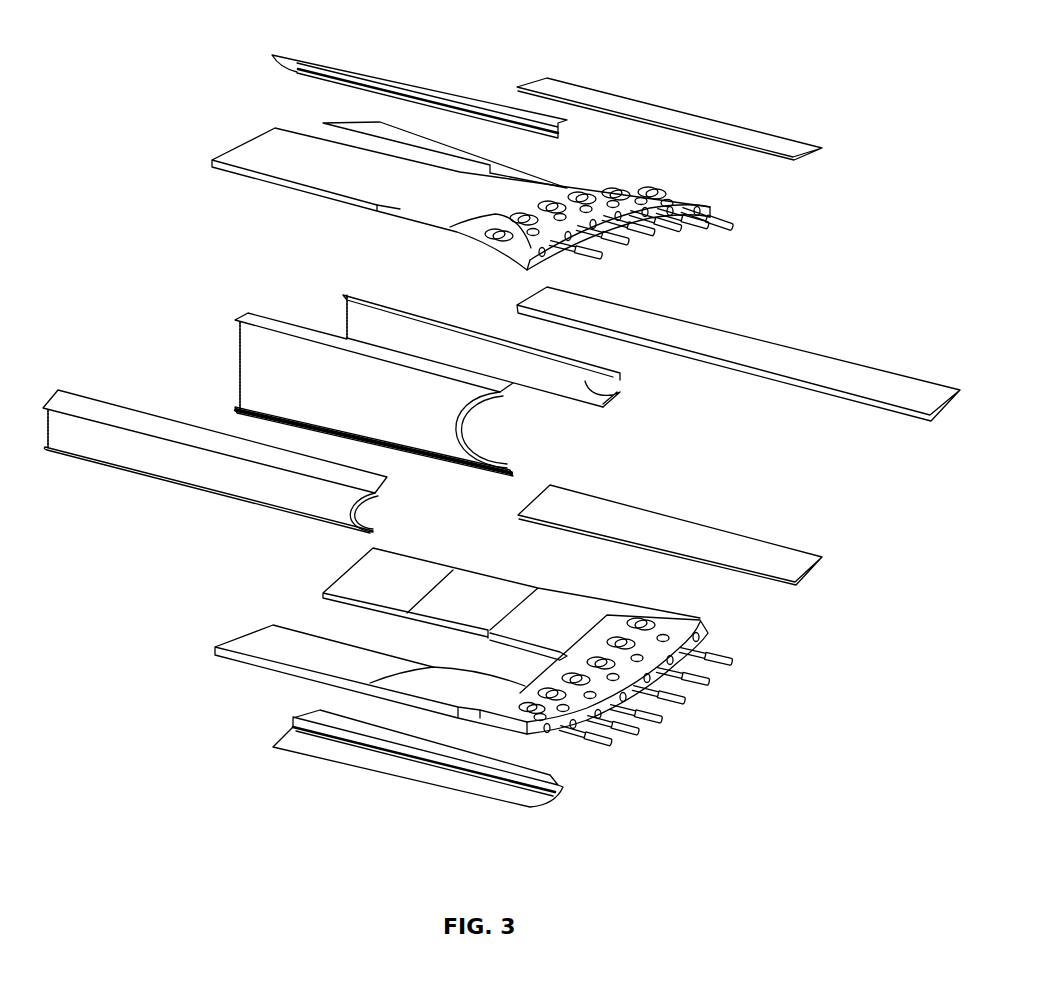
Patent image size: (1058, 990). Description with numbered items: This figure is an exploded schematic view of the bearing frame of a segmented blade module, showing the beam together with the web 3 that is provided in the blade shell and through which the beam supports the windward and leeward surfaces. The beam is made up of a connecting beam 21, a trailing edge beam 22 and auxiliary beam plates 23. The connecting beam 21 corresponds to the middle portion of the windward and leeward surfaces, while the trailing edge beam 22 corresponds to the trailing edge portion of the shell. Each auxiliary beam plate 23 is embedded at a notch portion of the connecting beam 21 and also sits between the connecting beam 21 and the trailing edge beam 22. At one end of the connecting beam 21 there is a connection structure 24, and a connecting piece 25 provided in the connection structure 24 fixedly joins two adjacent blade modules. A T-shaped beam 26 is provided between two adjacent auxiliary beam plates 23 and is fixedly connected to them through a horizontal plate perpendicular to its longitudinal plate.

The web 3 is at (245, 372).
The connecting beam 21 is at (307, 165).
The trailing edge beam 22 is at (812, 362).
The auxiliary beam plate 23 is at (285, 62).
The connection structure 24 is at (650, 618).
The connecting piece 25 is at (700, 688).
The T-shaped beam 26 is at (560, 132).